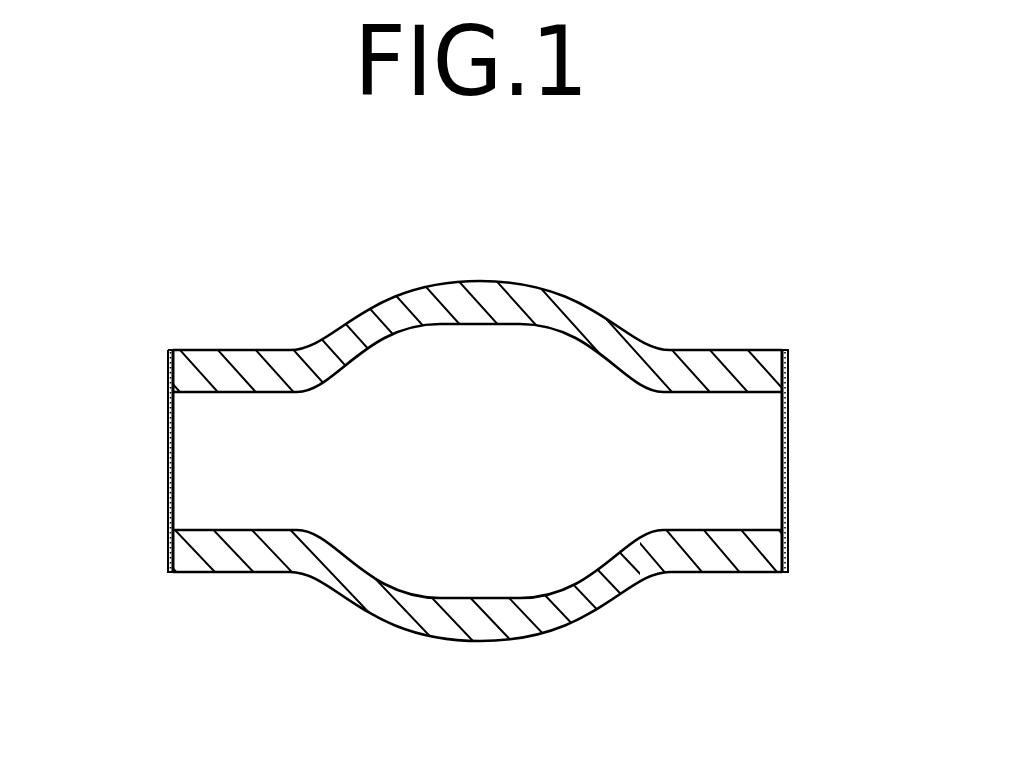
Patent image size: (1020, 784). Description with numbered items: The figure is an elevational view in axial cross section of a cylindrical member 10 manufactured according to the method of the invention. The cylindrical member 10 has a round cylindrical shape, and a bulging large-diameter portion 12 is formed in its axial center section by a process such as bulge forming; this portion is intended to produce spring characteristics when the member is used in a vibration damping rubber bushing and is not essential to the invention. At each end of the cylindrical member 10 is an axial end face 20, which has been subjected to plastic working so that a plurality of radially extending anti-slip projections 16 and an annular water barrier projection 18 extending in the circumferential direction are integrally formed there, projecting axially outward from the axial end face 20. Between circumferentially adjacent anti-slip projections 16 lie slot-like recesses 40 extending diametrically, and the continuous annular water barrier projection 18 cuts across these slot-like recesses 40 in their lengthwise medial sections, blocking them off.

The cylindrical member 10 is at (714, 285).
The bulging large-diameter portion 12 is at (475, 620).
The anti-slip projections 16 is at (167, 430).
The annular water barrier projection 18 is at (167, 557).
The axial end faces 20 is at (140, 455).
The slot-like recesses 40 is at (168, 380).